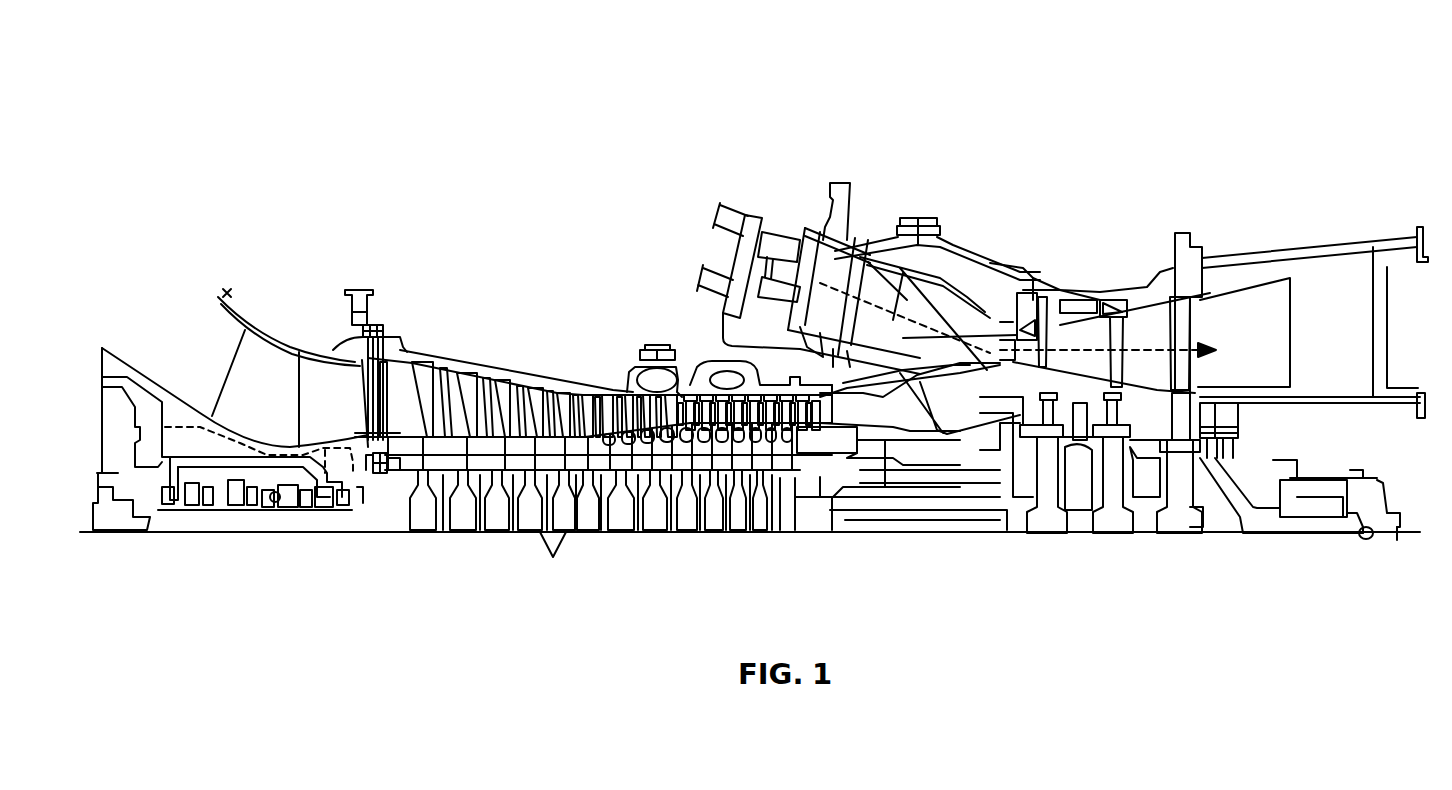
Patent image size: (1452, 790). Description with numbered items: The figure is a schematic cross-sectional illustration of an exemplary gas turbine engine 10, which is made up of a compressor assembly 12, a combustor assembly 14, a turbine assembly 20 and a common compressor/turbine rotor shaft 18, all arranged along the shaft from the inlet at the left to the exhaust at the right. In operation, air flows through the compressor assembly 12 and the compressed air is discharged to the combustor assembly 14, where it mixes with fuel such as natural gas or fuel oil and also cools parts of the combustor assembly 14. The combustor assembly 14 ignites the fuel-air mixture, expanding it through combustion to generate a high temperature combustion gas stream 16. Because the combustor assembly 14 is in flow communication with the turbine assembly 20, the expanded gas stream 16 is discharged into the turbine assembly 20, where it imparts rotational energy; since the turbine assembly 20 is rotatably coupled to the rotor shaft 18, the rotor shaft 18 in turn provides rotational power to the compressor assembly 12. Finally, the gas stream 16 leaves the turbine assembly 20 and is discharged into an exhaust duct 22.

The gas turbine engine 10 is at (222, 108).
The compressor assembly 12 is at (505, 368).
The combustor assembly 14 is at (806, 237).
The high temperature combustion gas stream 16 is at (1270, 343).
The common compressor/turbine rotor shaft 18 is at (397, 488).
The turbine assembly 20 is at (1170, 272).
The exhaust duct 22 is at (1340, 272).